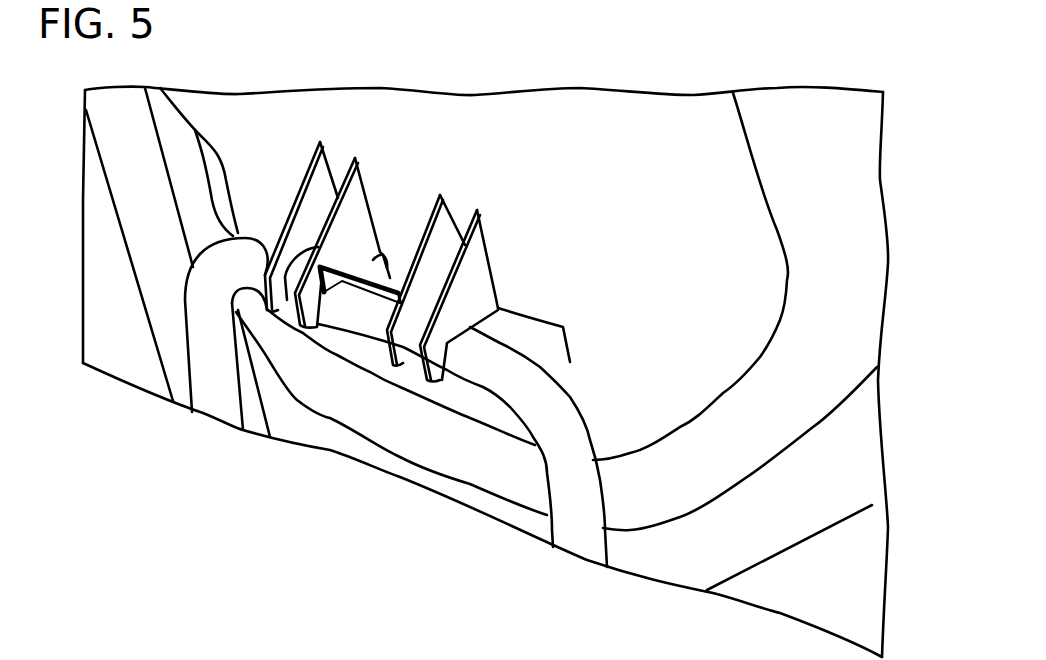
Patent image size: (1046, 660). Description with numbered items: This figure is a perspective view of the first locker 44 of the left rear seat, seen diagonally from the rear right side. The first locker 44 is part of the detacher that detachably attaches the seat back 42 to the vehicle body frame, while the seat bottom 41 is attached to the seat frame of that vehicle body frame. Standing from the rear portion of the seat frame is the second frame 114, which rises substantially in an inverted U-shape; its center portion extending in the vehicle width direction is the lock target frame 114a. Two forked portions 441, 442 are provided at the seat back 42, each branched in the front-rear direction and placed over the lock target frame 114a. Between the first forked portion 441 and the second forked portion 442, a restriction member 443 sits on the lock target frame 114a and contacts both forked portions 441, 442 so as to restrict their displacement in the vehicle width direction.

The first locker 44 is at (360, 293).
The seat back 42 is at (558, 143).
The seat bottom 41 is at (742, 520).
The first forked portion 441 is at (408, 362).
The second forked portion 442 is at (268, 318).
The restriction member 443 is at (362, 283).
The second frame 114 is at (433, 472).
The lock target frame 114a is at (367, 320).